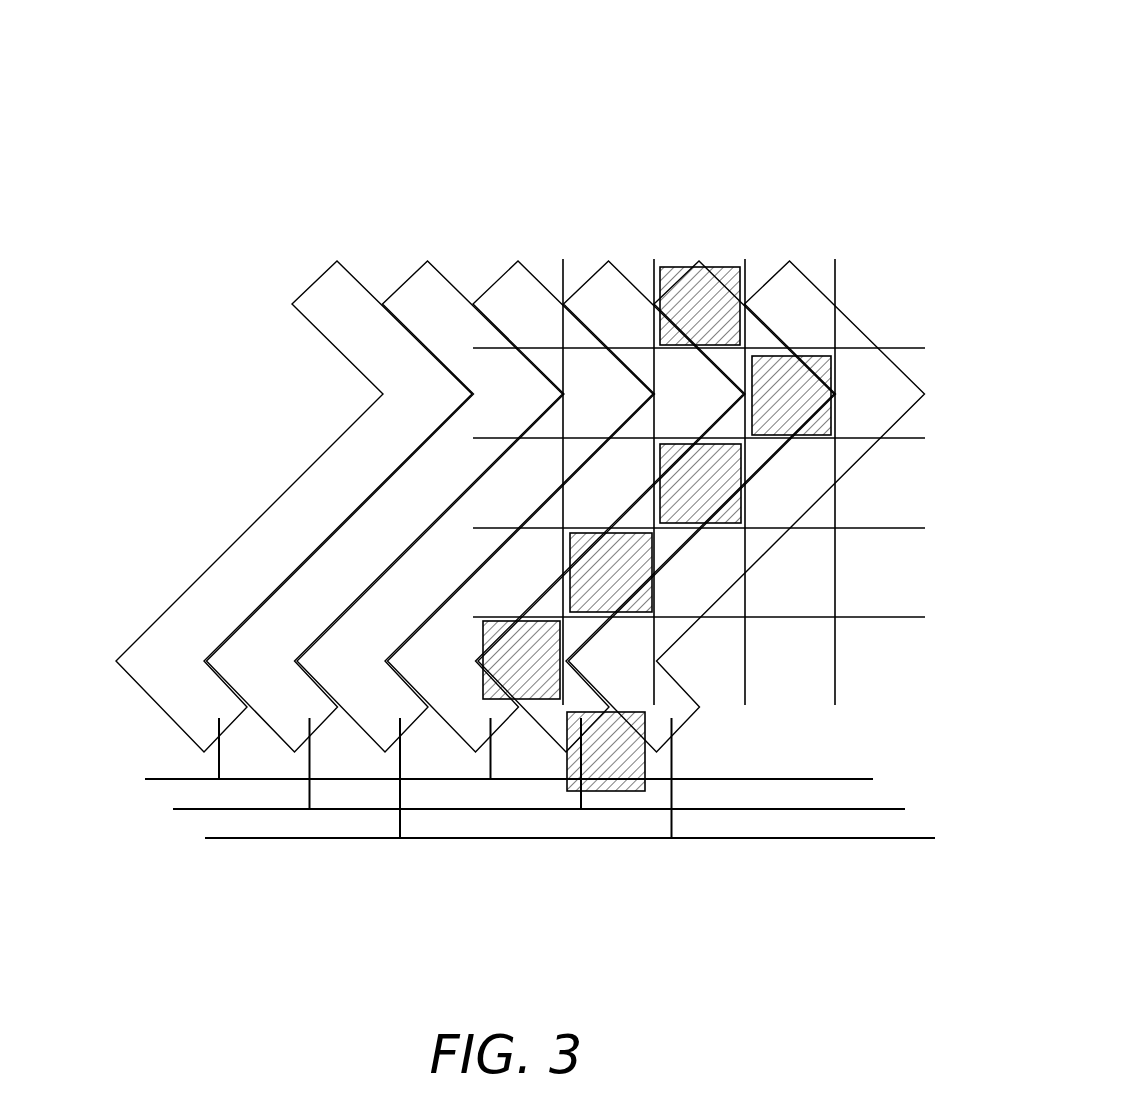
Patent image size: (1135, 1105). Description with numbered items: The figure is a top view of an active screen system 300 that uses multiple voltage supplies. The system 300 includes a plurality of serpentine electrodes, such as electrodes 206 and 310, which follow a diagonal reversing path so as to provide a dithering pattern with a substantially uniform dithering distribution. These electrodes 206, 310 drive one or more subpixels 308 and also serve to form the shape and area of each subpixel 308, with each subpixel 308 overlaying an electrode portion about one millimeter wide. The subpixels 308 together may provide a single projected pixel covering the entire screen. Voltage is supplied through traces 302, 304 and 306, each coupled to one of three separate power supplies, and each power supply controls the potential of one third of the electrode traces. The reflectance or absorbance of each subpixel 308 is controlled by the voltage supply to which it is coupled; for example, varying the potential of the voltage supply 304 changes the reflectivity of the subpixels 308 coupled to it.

The active screen system 300 is at (772, 108).
The electrode 206 is at (515, 263).
The trace 302 is at (182, 779).
The voltage supply 304 is at (217, 809).
The trace 306 is at (253, 838).
The subpixel 308 is at (723, 267).
The electrode 310 is at (697, 262).